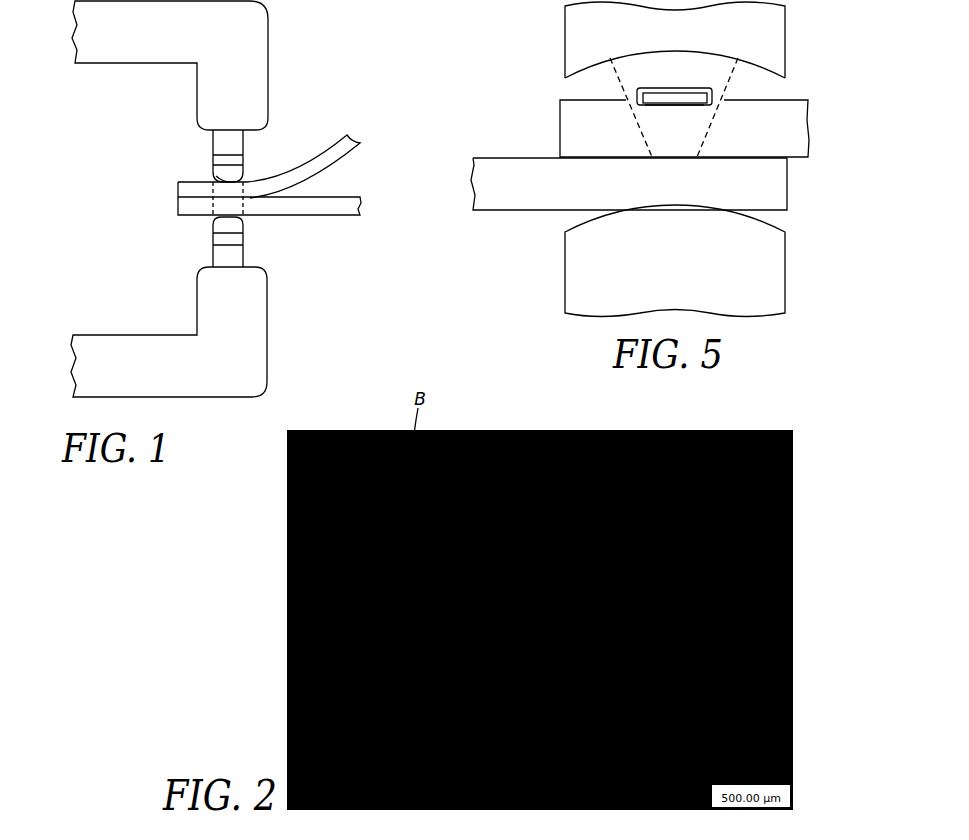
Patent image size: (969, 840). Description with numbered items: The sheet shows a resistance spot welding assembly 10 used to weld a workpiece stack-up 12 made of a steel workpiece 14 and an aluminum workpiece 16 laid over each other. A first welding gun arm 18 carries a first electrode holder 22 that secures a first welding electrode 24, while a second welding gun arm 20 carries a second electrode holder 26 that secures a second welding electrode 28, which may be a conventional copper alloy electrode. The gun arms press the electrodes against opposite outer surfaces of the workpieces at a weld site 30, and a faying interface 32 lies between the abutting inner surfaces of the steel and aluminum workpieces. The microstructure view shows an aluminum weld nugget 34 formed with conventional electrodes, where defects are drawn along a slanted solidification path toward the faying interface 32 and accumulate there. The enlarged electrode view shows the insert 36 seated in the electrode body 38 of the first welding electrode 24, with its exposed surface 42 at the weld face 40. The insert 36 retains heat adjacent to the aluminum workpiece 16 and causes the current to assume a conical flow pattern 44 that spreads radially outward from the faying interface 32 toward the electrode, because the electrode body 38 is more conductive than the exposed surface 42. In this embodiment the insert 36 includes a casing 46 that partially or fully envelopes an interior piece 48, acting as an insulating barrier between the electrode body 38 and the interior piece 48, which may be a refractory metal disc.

In FIG. 1, the resistance spot welding assembly 10 is at (368, 66).
In FIG. 1, the workpiece stack-up 12 is at (172, 197).
In FIG. 1, the steel workpiece 14 is at (347, 208).
In FIG. 5, the steel workpiece 14 is at (515, 193).
In FIG. 2, the steel workpiece 14 is at (355, 525).
In FIG. 1, the aluminum workpiece 16 is at (330, 160).
In FIG. 5, the aluminum workpiece 16 is at (587, 135).
In FIG. 2, the aluminum workpiece 16 is at (455, 485).
In FIG. 1, the first welding gun arm 18 is at (270, 32).
In FIG. 1, the second welding gun arm 20 is at (267, 320).
In FIG. 1, the first electrode holder 22 is at (225, 143).
In FIG. 1, the first welding electrode 24 is at (225, 175).
In FIG. 5, the first welding electrode 24 is at (560, 49).
In FIG. 1, the second electrode holder 26 is at (225, 255).
In FIG. 1, the second welding electrode 28 is at (227, 225).
In FIG. 5, the second welding electrode 28 is at (558, 264).
In FIG. 1, the weld site 30 is at (245, 207).
In FIG. 1, the faying interface 32 is at (222, 203).
In FIG. 5, the faying interface 32 is at (733, 158).
In FIG. 2, the faying interface 32 is at (510, 580).
In FIG. 2, the aluminum weld nugget 34 is at (757, 722).
In FIG. 5, the insert 36 is at (699, 83).
In FIG. 5, the electrode body 38 is at (763, 27).
In FIG. 5, the weld face 40 is at (625, 100).
In FIG. 5, the exposed surface 42 is at (661, 107).
In FIG. 5, the conical flow pattern 44 is at (715, 115).
In FIG. 5, the casing 46 is at (658, 92).
In FIG. 5, the interior piece 48 is at (652, 107).